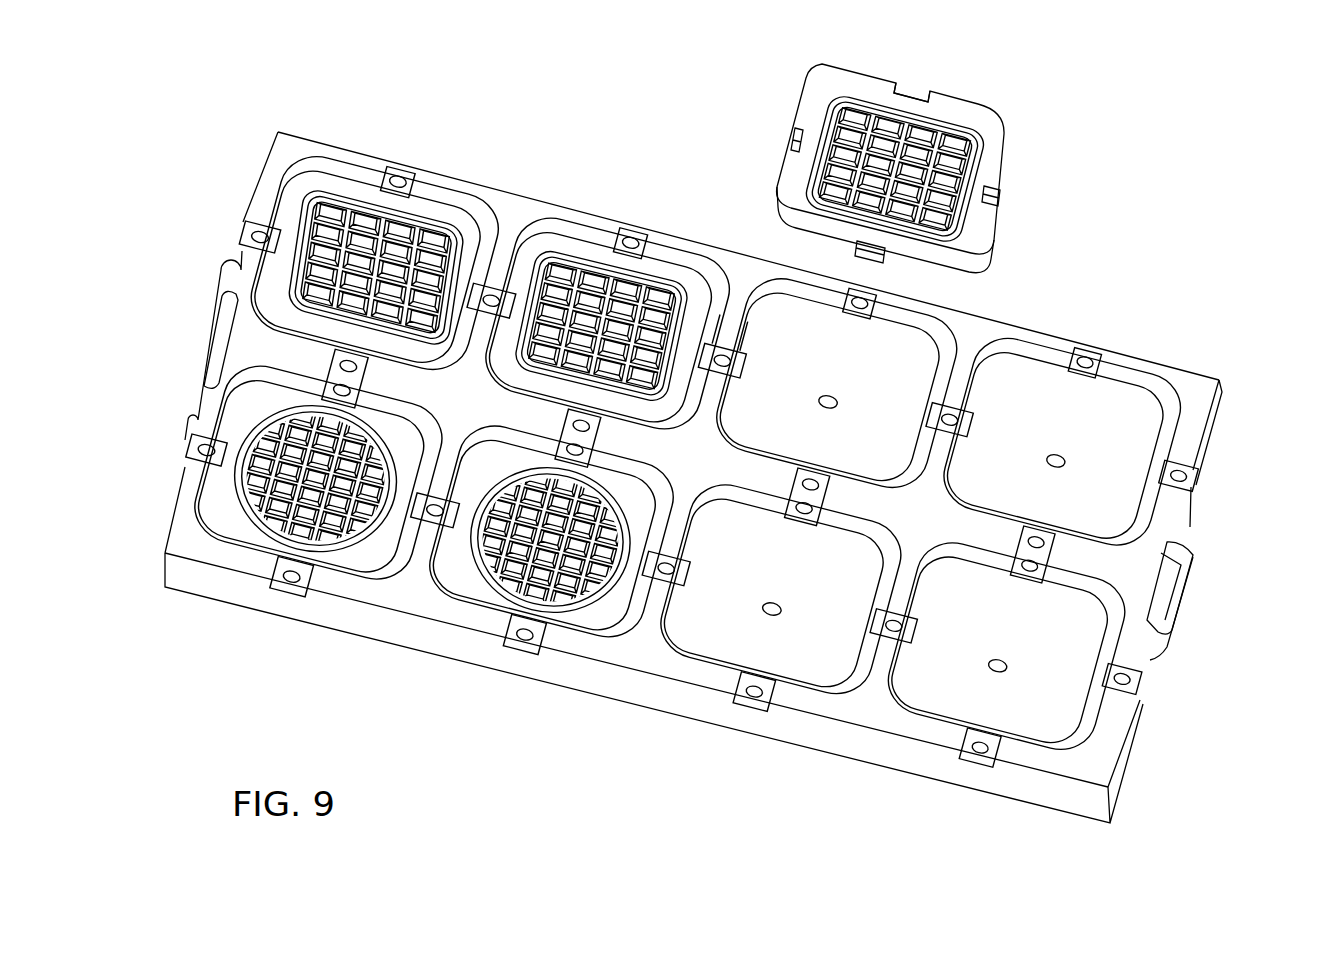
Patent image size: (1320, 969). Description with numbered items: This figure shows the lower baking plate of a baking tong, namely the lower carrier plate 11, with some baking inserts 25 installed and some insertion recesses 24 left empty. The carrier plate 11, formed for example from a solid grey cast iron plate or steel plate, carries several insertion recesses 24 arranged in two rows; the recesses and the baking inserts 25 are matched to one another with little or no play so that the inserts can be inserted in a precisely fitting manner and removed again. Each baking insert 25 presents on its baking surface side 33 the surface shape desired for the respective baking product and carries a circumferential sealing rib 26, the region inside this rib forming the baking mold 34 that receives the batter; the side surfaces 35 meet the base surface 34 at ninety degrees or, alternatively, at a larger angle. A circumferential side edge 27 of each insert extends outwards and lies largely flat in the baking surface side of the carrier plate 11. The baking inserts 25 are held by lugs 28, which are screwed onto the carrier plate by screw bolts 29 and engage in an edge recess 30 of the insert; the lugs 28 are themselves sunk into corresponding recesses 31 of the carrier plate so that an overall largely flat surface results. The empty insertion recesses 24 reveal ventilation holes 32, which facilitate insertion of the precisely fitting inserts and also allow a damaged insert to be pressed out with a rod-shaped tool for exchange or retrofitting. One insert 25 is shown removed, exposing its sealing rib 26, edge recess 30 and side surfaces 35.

The lower carrier plate 11 is at (505, 225).
The insertion recess 24 is at (1177, 395).
The baking insert 25 is at (484, 586).
The circumferential sealing rib 26 is at (336, 186).
The circumferential side edge 27 is at (447, 210).
The lug 28 is at (252, 237).
The screw bolt 29 is at (288, 578).
The edge recess 30 is at (915, 92).
The recess of the carrier plate 31 is at (1152, 590).
The ventilation hole 32 is at (1064, 454).
The baking surface side 33 is at (726, 327).
The baking mold 34 is at (995, 252).
The side surface 35 is at (962, 276).